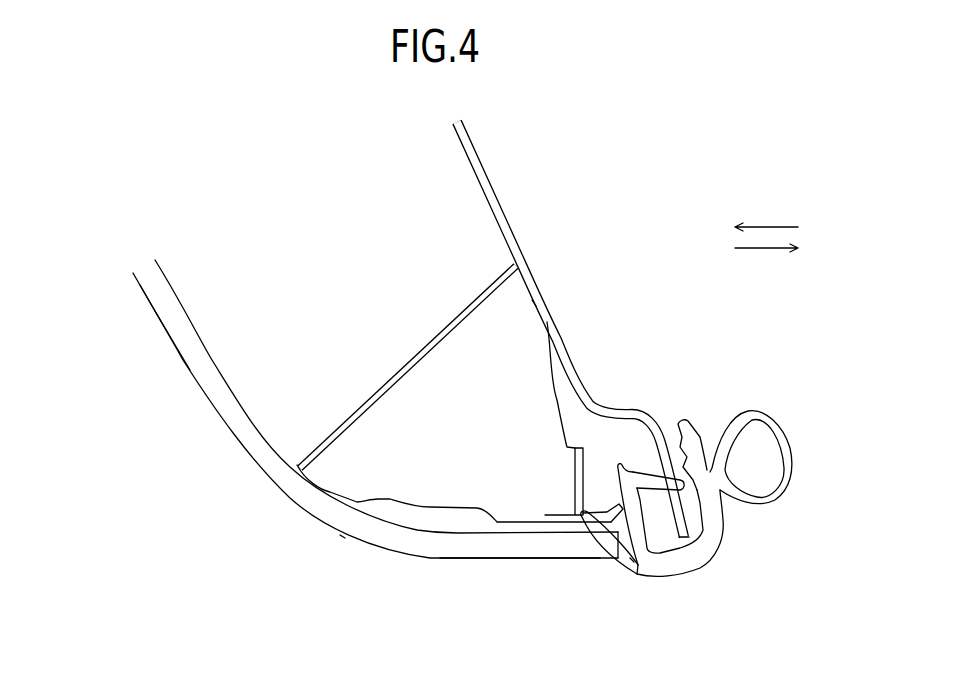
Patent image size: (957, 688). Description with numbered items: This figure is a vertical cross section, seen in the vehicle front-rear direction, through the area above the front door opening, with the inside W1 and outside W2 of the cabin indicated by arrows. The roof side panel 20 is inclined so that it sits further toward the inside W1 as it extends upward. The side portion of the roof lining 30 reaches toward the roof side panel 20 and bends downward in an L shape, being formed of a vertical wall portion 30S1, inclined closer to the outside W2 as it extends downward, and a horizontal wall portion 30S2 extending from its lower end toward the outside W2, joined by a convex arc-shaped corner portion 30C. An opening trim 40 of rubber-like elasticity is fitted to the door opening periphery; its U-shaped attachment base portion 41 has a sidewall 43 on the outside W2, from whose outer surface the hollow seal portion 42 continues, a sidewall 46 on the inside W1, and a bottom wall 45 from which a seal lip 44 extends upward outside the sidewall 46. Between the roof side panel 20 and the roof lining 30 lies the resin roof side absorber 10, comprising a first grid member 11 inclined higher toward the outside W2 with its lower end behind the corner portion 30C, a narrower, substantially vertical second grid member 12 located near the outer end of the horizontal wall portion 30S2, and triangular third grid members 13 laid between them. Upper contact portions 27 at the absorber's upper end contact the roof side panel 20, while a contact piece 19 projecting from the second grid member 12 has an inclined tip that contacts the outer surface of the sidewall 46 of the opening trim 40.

The roof side absorber 10 is at (393, 274).
The first grid member 11 is at (410, 358).
The second grid member 12 is at (580, 467).
The third grid member 13 is at (502, 383).
The contact piece 19 is at (632, 560).
The roof side panel 20 is at (529, 277).
The upper contact portion 27 is at (532, 300).
The roof lining 30 is at (245, 509).
The vertical wall portion 30S1 is at (208, 373).
The horizontal wall portion 30S2 is at (520, 560).
The corner portion 30C is at (362, 525).
The opening trim 40 is at (774, 555).
The attachment base portion 41 is at (615, 501).
The hollow seal portion 42 is at (795, 462).
The sidewall 43 is at (710, 460).
The seal lip 44 is at (623, 562).
The bottom wall 45 is at (688, 562).
The sidewall 46 is at (632, 507).
The inside of the cabin W1 is at (783, 223).
The outside of the cabin W2 is at (783, 246).